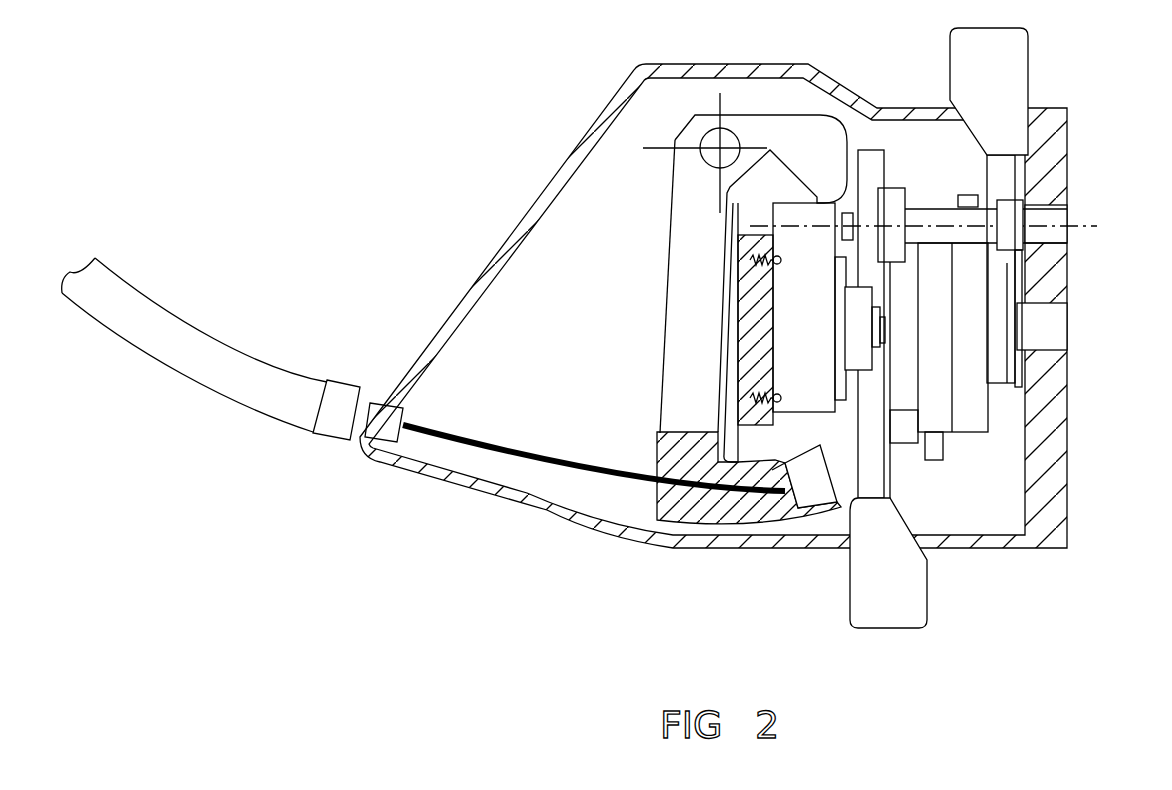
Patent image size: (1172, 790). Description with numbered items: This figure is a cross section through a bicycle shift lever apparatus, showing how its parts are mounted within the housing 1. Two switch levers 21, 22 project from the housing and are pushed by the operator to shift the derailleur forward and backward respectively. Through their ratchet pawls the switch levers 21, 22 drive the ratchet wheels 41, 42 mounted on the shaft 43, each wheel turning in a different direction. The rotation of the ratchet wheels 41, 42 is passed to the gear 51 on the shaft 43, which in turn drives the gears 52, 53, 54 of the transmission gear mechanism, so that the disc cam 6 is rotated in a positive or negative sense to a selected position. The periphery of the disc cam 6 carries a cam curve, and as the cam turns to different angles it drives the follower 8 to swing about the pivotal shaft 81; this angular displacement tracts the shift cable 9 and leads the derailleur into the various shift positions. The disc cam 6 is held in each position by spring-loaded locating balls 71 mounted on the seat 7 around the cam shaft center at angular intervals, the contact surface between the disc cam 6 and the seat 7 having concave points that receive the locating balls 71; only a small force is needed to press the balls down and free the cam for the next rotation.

The housing 1 is at (533, 187).
The disc cam 6 is at (815, 400).
The seat 7 is at (762, 420).
The locating balls 71 is at (775, 262).
The follower 8 is at (695, 227).
The pivotal shaft 81 is at (710, 137).
The shift cable 9 is at (480, 442).
The switch lever 21 is at (885, 598).
The switch lever 22 is at (1007, 85).
The ratchet wheel 41 is at (970, 415).
The ratchet wheel 42 is at (935, 417).
The shaft 43 is at (1055, 320).
The gear 51 is at (900, 393).
The gear 52 is at (897, 193).
The gear 53 is at (867, 167).
The gear 54 is at (858, 333).